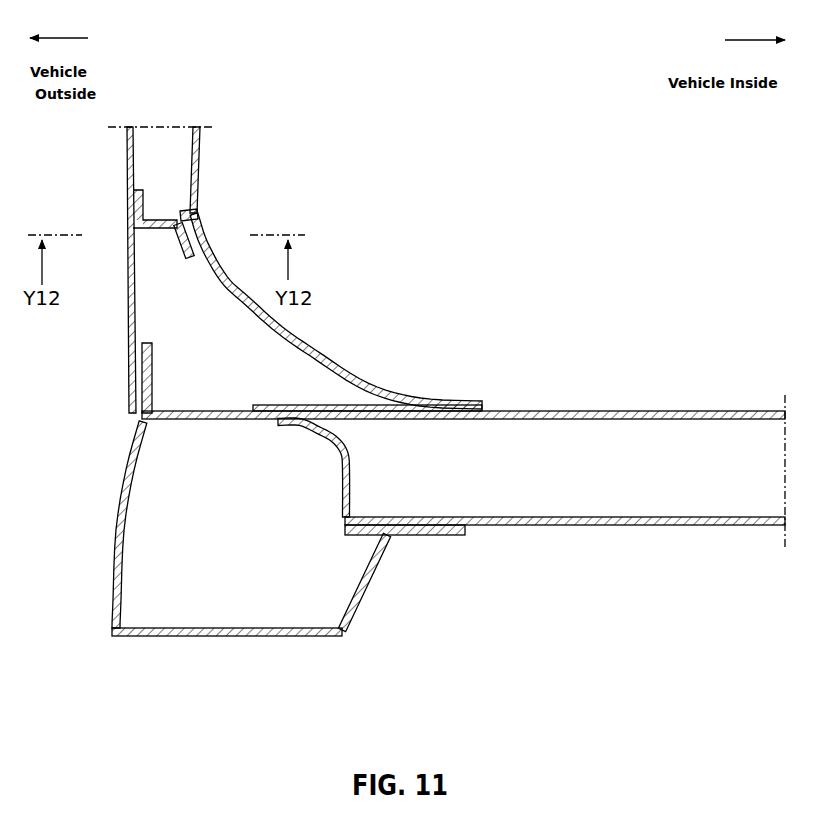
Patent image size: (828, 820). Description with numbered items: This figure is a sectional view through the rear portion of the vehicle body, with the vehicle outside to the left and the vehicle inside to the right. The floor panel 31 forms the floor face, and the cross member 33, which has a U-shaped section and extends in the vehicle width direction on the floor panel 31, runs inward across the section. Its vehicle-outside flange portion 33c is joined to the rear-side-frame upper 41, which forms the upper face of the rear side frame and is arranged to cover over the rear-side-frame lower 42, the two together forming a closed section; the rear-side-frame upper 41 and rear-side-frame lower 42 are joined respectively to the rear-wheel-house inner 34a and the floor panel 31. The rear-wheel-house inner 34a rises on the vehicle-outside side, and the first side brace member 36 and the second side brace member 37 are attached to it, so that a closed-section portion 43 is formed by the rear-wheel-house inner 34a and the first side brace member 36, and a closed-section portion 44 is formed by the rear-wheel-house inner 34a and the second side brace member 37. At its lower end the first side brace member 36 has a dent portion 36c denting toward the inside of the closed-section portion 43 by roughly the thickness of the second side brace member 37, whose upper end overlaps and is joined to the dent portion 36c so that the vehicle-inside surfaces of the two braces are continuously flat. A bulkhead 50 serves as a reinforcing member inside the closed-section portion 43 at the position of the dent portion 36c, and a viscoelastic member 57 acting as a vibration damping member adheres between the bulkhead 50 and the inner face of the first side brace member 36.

The floor panel 31 is at (650, 517).
The cross member 33 is at (662, 410).
The vehicle-outside flange portion 33c is at (256, 405).
The rear-wheel-house inner 34a is at (126, 143).
The first side brace member 36 is at (201, 152).
The dent portion 36c is at (181, 205).
The second side brace member 37 is at (368, 386).
The rear-side-frame upper 41 is at (352, 460).
The rear-side-frame lower 42 is at (368, 597).
The closed-section portion 43 is at (152, 137).
The closed-section portion 44 is at (183, 330).
The bulkhead 50 is at (172, 252).
The viscoelastic member 57 is at (191, 256).